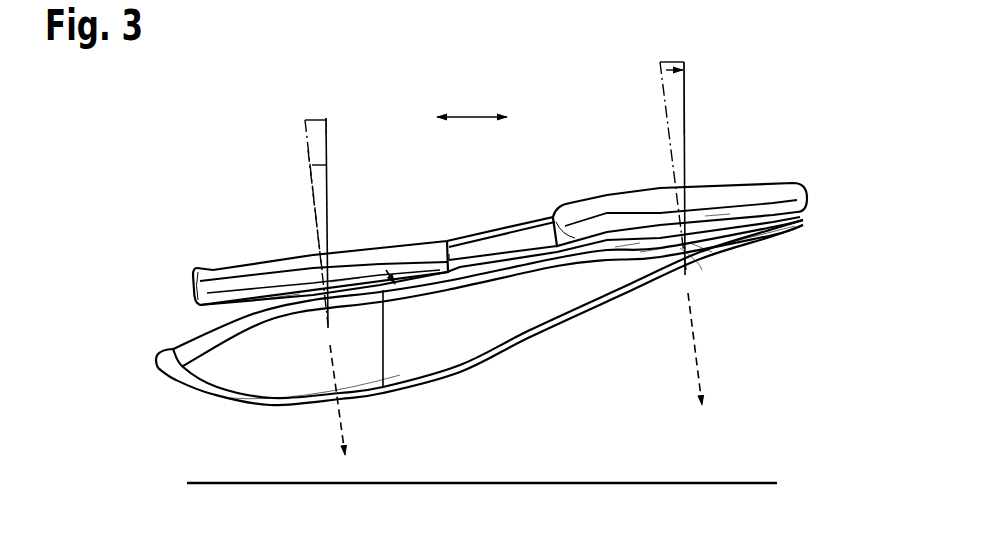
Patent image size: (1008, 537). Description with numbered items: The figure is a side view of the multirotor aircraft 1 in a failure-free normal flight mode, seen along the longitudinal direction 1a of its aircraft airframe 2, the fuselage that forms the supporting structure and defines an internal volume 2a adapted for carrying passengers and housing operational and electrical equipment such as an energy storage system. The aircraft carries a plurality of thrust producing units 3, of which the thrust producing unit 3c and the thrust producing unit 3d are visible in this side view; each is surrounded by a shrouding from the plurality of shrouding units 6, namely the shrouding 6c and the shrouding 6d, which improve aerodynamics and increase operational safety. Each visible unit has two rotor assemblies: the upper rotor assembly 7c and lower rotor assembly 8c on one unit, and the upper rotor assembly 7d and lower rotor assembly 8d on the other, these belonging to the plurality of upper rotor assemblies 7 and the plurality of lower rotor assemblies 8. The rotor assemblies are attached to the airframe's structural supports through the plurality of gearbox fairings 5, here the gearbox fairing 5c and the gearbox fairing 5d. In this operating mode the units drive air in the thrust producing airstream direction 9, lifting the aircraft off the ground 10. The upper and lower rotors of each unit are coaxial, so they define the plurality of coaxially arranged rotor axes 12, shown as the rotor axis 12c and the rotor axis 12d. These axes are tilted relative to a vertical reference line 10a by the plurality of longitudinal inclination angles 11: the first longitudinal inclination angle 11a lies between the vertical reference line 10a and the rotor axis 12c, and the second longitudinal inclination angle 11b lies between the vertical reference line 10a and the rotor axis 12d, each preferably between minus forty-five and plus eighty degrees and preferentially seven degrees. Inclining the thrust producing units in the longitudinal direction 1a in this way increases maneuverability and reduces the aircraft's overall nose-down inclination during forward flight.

The multirotor aircraft 1 is at (197, 208).
The longitudinal direction 1a is at (470, 115).
The aircraft airframe 2 is at (158, 352).
The internal volume 2a is at (243, 373).
The plurality of thrust producing units 3 is at (793, 177).
The thrust producing unit 3c is at (438, 238).
The thrust producing unit 3d is at (768, 177).
The plurality of gearbox fairings 5 is at (699, 247).
The gearbox fairing 5c is at (355, 287).
The gearbox fairing 5d is at (691, 245).
The plurality of shrouding units 6 is at (545, 219).
The shrouding 6c is at (215, 278).
The shrouding 6d is at (573, 222).
The plurality of upper rotor assemblies 7 is at (755, 228).
The upper rotor assembly 7c is at (412, 297).
The upper rotor assembly 7d is at (717, 211).
The plurality of lower rotor assemblies 8 is at (627, 247).
The lower rotor assembly 8c is at (280, 301).
The lower rotor assembly 8d is at (650, 253).
The thrust producing airstream direction 9 is at (347, 410).
The ground 10 is at (534, 479).
The vertical reference line 10a is at (328, 134).
The plurality of longitudinal inclination angles 11 is at (327, 146).
The first longitudinal inclination angle 11a is at (325, 118).
The second longitudinal inclination angle 11b is at (680, 62).
The plurality of coaxially arranged rotor axes 12 is at (329, 165).
The rotor axis 12c is at (312, 193).
The rotor axis 12d is at (670, 143).